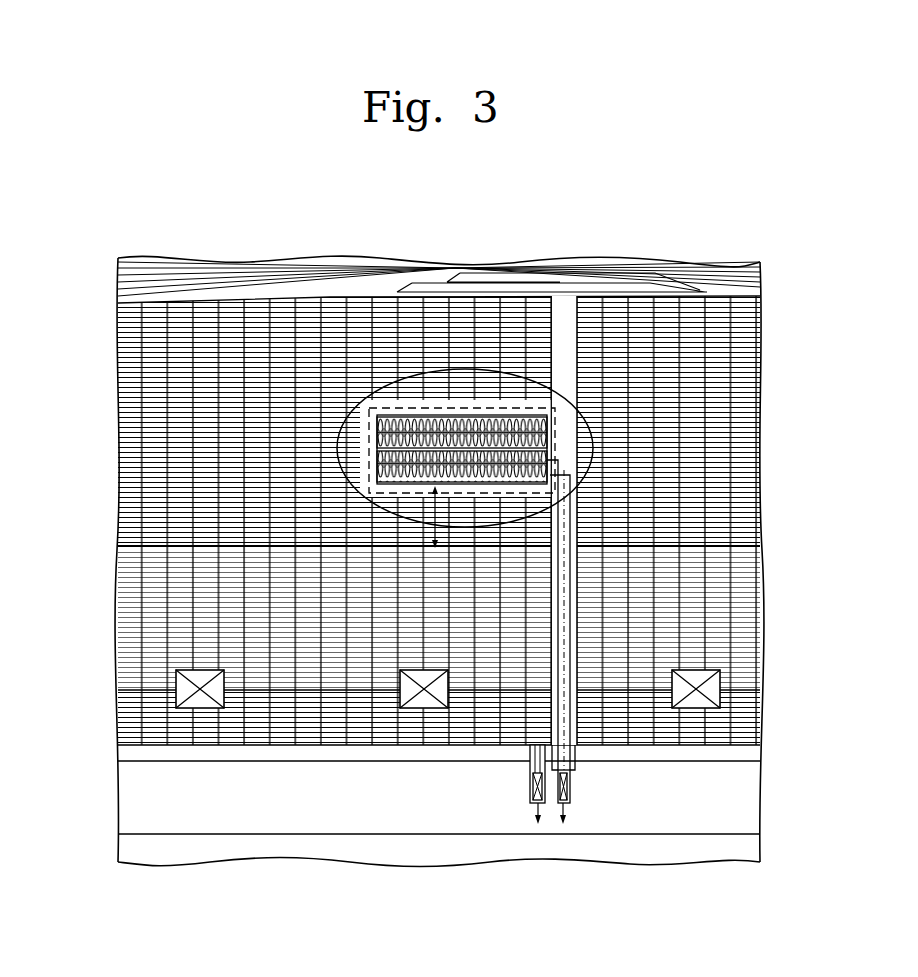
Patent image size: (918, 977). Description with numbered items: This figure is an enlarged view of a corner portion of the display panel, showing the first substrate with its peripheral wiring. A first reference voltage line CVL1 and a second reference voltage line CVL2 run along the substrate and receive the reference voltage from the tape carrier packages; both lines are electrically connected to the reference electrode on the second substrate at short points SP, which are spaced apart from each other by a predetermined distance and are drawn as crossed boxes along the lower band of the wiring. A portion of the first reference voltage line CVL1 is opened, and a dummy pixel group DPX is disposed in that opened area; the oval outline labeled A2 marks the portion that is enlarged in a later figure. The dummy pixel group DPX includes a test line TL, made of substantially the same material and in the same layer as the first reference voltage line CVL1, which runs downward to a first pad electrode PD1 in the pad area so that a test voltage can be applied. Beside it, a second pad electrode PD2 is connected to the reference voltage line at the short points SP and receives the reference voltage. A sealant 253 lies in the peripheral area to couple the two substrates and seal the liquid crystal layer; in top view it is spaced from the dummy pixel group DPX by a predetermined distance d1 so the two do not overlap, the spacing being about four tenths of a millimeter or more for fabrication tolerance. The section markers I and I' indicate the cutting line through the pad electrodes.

The portion A2 is at (427, 372).
The dummy pixel group DPX is at (490, 408).
The first reference voltage line CVL1 is at (118, 478).
The second reference voltage line CVL2 is at (760, 488).
The sealant 253 is at (735, 548).
The predetermined distance d1 is at (445, 517).
The test line TL is at (572, 752).
The first pad electrode PD1 is at (569, 787).
The second pad electrode PD2 is at (530, 788).
The short points SP is at (200, 710).
The section line I is at (534, 817).
The section line I' is at (571, 817).